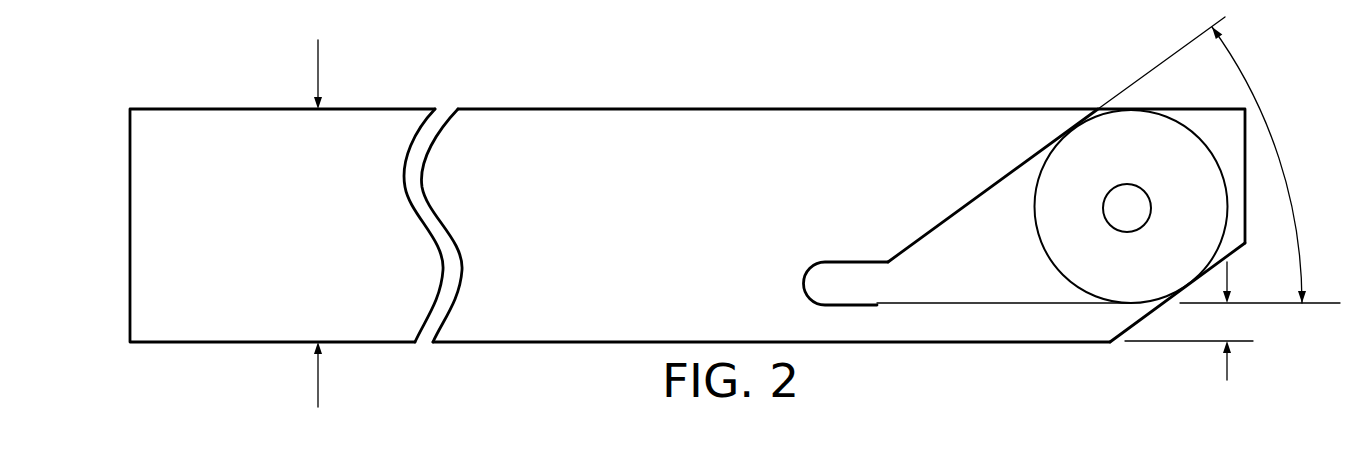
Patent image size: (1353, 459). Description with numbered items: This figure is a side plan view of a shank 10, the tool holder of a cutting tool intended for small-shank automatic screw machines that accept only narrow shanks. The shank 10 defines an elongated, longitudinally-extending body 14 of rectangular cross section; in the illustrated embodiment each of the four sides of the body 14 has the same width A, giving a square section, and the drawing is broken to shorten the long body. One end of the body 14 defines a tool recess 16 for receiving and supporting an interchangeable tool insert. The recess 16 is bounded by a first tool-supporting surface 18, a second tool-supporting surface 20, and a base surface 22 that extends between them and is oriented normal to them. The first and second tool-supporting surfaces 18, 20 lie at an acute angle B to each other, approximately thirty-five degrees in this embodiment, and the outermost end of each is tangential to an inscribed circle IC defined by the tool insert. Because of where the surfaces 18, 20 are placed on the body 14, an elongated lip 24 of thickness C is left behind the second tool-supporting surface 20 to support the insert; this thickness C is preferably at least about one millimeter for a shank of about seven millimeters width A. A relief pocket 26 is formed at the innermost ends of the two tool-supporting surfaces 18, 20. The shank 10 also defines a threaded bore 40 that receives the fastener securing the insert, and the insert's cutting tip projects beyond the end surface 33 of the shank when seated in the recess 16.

The shank 10 is at (760, 96).
The body 14 is at (562, 285).
The tool recess 16 is at (1189, 101).
The first tool-supporting surface 18 is at (951, 212).
The second tool-supporting surface 20 is at (995, 302).
The base surface 22 is at (1133, 267).
The lip 24 is at (973, 318).
The relief pocket 26 is at (840, 261).
The end surface 33 is at (1248, 208).
The threaded bore 40 is at (1104, 198).
The width A is at (318, 367).
The acute angle B is at (1277, 153).
The thickness C is at (1228, 362).
The inscribed circle IC is at (1047, 252).